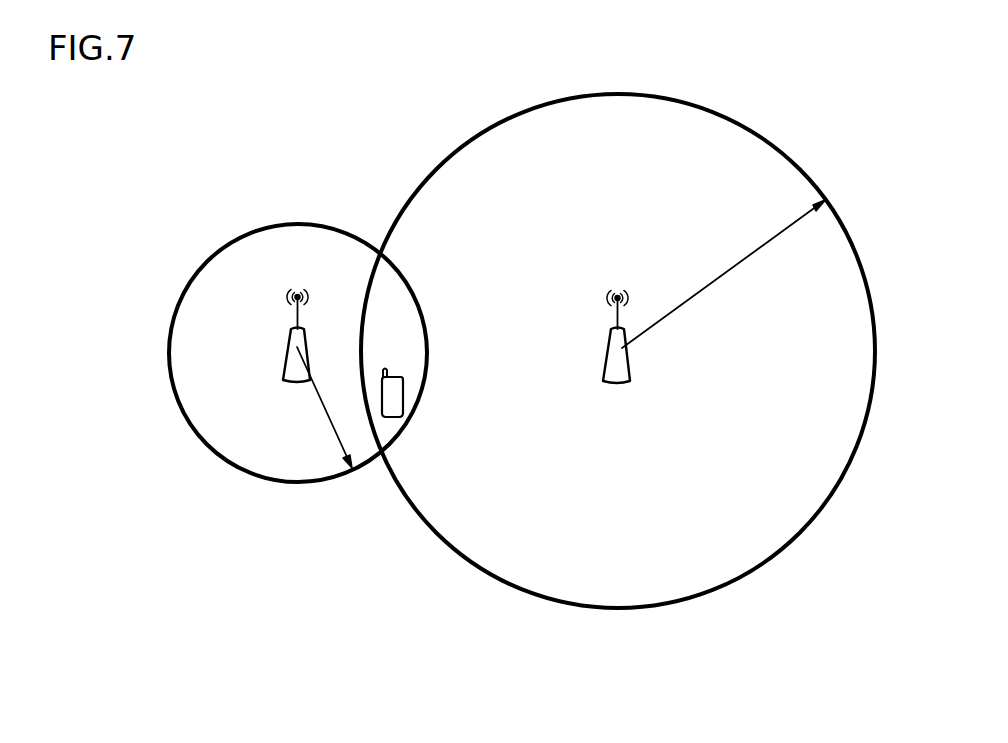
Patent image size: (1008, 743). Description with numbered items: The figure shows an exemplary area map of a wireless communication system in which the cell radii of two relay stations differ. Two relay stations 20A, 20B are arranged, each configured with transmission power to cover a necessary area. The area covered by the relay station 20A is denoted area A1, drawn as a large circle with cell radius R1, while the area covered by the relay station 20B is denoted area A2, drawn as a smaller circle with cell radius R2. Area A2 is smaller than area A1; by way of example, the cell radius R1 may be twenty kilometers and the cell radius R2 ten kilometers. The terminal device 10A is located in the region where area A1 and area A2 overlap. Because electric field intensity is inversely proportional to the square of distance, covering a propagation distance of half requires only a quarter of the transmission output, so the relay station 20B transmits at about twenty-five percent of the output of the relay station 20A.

The area A1 is at (456, 149).
The area A2 is at (215, 250).
The cell radius R1 is at (724, 274).
The cell radius R2 is at (334, 407).
The terminal device 10A is at (404, 378).
The relay station 20A is at (606, 337).
The relay station 20B is at (288, 340).